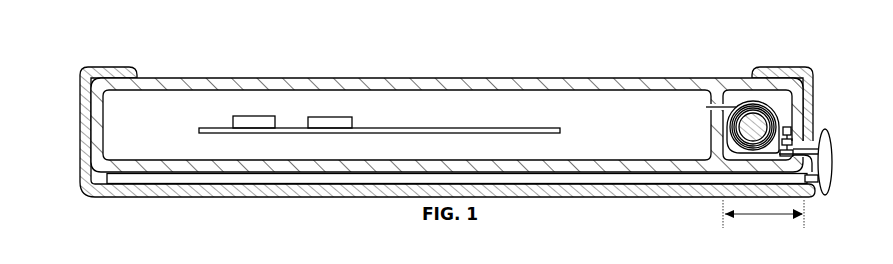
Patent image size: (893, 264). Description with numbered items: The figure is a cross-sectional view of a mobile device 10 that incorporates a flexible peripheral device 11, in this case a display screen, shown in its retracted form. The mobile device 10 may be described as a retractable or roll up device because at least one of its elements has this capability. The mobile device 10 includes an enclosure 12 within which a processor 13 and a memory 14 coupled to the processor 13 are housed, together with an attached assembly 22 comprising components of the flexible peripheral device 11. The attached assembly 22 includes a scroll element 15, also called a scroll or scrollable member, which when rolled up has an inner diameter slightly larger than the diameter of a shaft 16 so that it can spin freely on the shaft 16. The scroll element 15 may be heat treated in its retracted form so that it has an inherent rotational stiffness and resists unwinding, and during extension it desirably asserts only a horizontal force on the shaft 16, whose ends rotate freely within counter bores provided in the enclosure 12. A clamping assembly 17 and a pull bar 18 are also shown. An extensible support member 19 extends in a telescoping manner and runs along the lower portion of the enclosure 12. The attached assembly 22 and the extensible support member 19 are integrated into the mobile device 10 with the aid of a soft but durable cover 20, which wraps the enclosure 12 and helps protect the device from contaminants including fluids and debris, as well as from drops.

The mobile device 10 is at (210, 64).
The flexible peripheral device 11 is at (825, 199).
The enclosure 12 is at (393, 78).
The processor 13 is at (255, 116).
The memory 14 is at (328, 117).
The scroll element 15 is at (768, 153).
The shaft 16 is at (728, 127).
The clamping assembly 17 is at (795, 128).
The pull bar 18 is at (831, 153).
The extensible support member 19 is at (249, 183).
The cover 20 is at (84, 193).
The attached assembly 22 is at (760, 216).